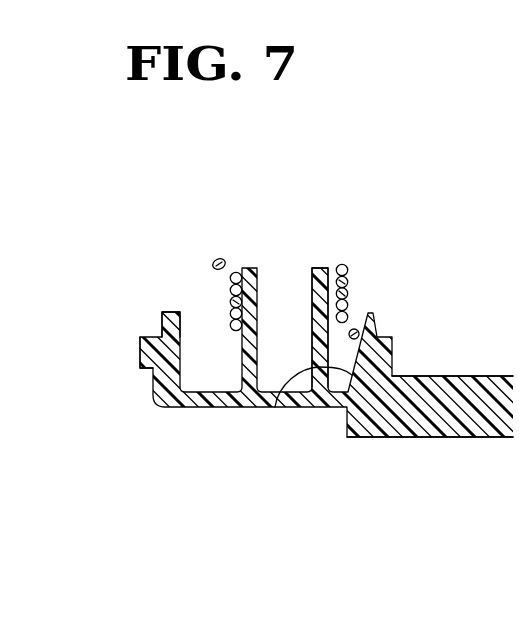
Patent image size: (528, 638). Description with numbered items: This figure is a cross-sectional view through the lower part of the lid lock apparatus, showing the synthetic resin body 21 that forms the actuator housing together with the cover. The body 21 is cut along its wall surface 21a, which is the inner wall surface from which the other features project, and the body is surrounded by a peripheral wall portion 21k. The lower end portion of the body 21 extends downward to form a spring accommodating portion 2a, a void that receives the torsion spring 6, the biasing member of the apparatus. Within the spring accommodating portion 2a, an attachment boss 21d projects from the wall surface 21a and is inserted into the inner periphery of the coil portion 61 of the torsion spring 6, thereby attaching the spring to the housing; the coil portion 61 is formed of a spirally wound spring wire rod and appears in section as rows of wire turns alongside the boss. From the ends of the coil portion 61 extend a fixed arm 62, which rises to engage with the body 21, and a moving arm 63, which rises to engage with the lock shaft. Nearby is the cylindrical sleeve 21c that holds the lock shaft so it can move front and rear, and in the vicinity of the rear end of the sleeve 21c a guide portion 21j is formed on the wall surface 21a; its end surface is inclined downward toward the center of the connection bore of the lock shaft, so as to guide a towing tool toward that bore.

The body 21 is at (190, 407).
The peripheral wall portion 21k is at (163, 325).
The wall surface 21a is at (217, 392).
The attachment boss 21d is at (328, 267).
The cylindrical sleeve 21c is at (455, 437).
The guide portion 21j is at (275, 407).
The spring accommodating portion 2a is at (220, 360).
The torsion spring 6 is at (347, 294).
The coil portion 61 is at (229, 292).
The fixed arm 62 is at (214, 259).
The moving arm 63 is at (359, 333).